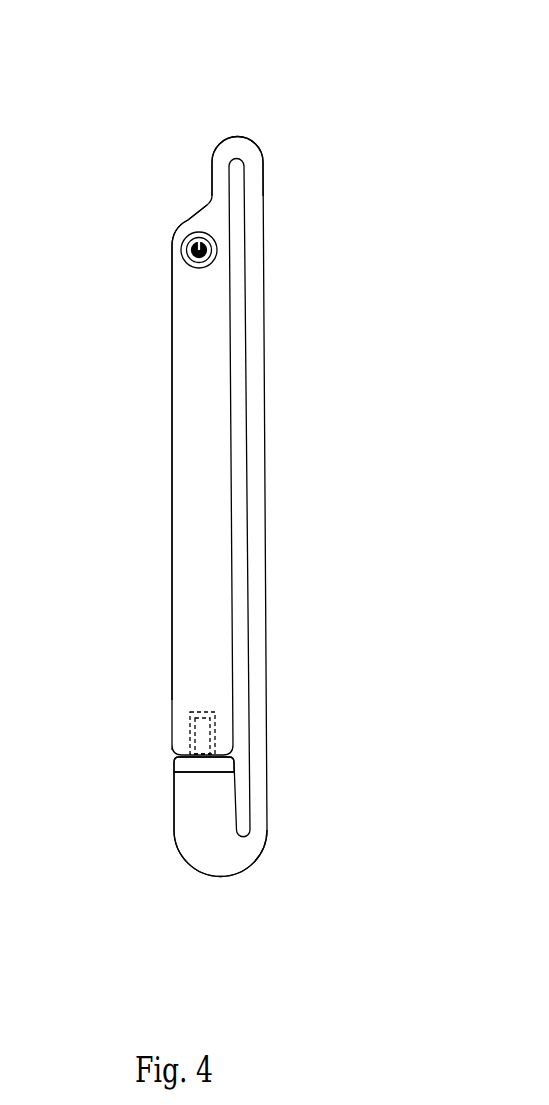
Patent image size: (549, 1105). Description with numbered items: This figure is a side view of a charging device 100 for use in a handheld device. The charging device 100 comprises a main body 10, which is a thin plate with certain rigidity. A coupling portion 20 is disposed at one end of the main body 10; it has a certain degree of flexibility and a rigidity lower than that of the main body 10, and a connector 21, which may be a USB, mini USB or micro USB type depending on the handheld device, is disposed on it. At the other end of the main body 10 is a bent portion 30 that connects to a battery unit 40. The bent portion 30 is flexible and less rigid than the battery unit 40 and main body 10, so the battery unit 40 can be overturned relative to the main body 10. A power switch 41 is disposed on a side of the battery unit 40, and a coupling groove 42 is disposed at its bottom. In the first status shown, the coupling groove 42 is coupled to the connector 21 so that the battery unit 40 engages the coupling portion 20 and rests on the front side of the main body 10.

The charging device 100 is at (430, 69).
The main body 10 is at (257, 435).
The coupling portion 20 is at (245, 848).
The connector 21 is at (200, 747).
The bent portion 30 is at (240, 152).
The battery unit 40 is at (199, 503).
The power switch 41 is at (199, 250).
The coupling groove 42 is at (193, 713).